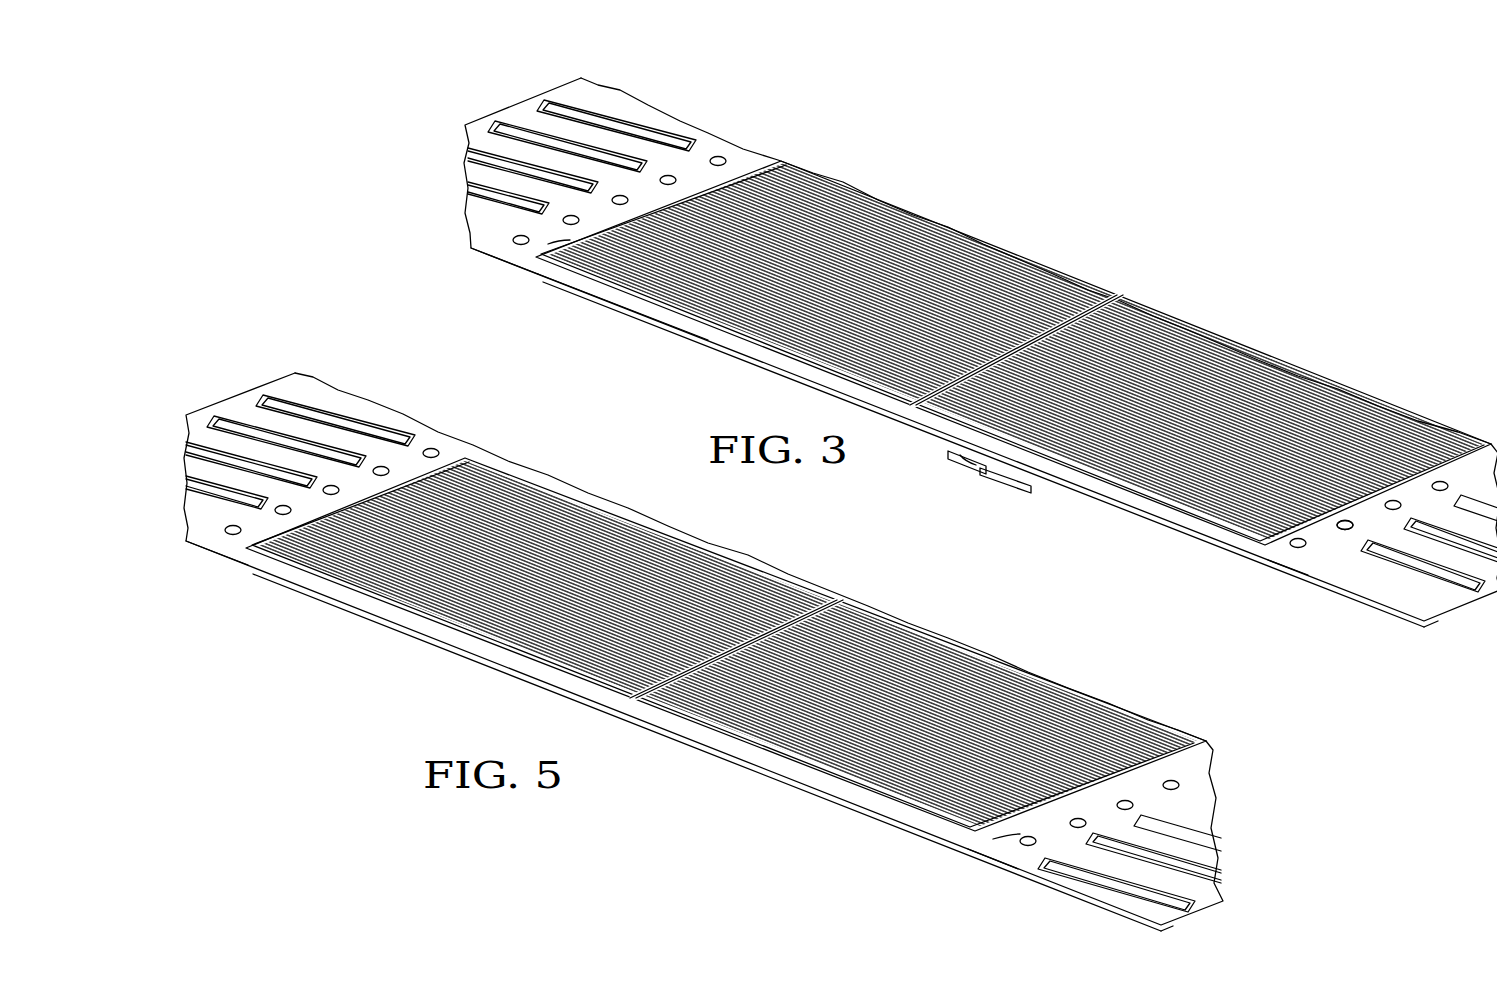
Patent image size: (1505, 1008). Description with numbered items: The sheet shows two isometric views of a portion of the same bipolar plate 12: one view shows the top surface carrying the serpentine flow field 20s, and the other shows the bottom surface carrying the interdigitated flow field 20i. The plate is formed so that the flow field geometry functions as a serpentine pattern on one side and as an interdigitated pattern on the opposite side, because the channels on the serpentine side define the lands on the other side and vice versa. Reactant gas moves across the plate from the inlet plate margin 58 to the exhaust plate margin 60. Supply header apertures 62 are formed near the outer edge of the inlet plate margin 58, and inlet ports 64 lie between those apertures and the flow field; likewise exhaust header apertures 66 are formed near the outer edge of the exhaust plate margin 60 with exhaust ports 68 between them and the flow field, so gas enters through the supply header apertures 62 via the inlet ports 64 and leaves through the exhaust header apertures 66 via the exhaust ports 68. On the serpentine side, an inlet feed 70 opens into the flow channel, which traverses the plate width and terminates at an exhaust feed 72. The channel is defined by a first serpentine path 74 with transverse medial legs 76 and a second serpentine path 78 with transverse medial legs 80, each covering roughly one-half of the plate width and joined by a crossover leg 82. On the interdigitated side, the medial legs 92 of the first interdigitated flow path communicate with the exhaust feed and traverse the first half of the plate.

In FIG. 3, the bipolar plate 12 is at (707, 138).
In FIG. 5, the bipolar plate 12 is at (445, 445).
In FIG. 3, the serpentine flow field 20s is at (936, 192).
In FIG. 5, the interdigitated flow field 20i is at (711, 771).
In FIG. 3, the inlet plate margin 58 is at (497, 249).
In FIG. 5, the inlet plate margin 58 is at (1000, 846).
In FIG. 3, the exhaust plate margin 60 is at (1268, 548).
In FIG. 5, the exhaust plate margin 60 is at (212, 535).
In FIG. 3, the supply header apertures 62 is at (471, 174).
In FIG. 5, the supply header apertures 62 is at (1102, 874).
In FIG. 3, the inlet ports 64 is at (540, 196).
In FIG. 5, the inlet ports 64 is at (993, 828).
In FIG. 3, the exhaust header apertures 66 is at (1402, 574).
In FIG. 5, the exhaust header apertures 66 is at (192, 508).
In FIG. 3, the exhaust ports 68 is at (1287, 535).
In FIG. 5, the exhaust ports 68 is at (228, 516).
In FIG. 3, the inlet feed 70 is at (550, 233).
In FIG. 3, the exhaust feed 72 is at (1343, 518).
In FIG. 3, the first serpentine path 74 is at (616, 305).
In FIG. 3, the medial legs 76 is at (775, 318).
In FIG. 3, the second serpentine path 78 is at (1086, 509).
In FIG. 3, the medial legs 80 is at (1172, 455).
In FIG. 3, the crossover leg 82 is at (906, 392).
In FIG. 5, the medial legs 92 is at (1107, 828).